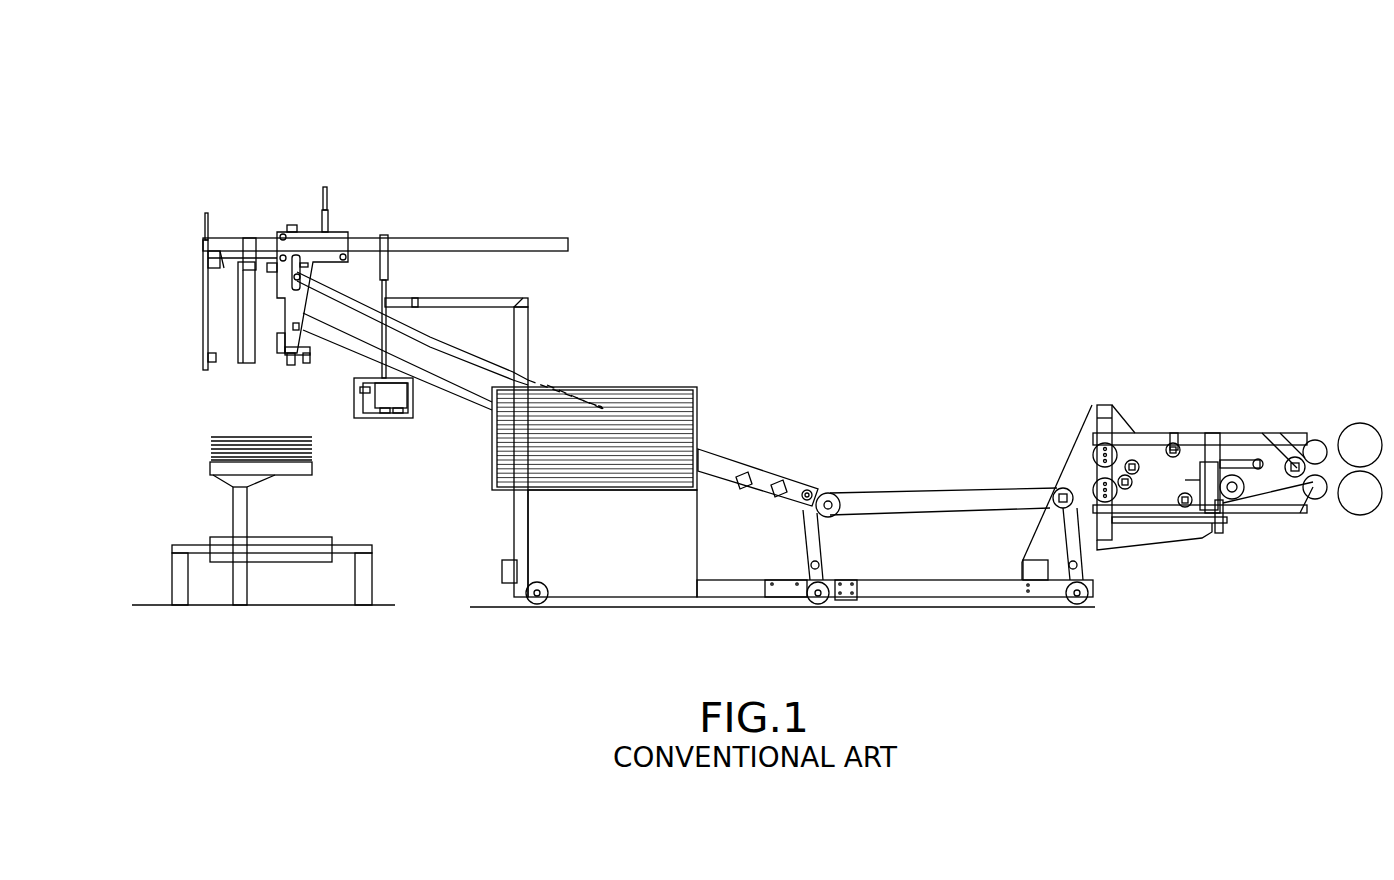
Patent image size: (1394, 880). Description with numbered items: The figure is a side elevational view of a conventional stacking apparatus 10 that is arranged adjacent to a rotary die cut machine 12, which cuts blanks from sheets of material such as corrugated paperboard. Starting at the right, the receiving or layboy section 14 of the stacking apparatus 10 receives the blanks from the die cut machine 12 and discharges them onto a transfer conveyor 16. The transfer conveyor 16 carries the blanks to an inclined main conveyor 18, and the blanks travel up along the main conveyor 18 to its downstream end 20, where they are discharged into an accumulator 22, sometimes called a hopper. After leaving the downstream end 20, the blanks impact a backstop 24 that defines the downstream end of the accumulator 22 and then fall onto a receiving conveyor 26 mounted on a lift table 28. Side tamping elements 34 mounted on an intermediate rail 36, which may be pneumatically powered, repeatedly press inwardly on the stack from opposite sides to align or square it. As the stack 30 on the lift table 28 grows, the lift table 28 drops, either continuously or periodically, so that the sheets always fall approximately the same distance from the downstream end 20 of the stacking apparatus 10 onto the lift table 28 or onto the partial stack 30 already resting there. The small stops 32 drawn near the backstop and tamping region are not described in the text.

The stacking apparatus 10 is at (887, 332).
The rotary die cut machine 12 is at (1342, 392).
The receiving or layboy section 14 is at (1213, 556).
The transfer conveyor 16 is at (944, 472).
The inclined main conveyor 18 is at (748, 440).
The downstream end 20 is at (307, 308).
The accumulator 22 is at (227, 298).
The backstop 24 is at (202, 335).
The receiving conveyor 26 is at (204, 483).
The lift table 28 is at (214, 538).
The stack 30 is at (184, 443).
The stops 32 is at (212, 357).
The side tamping elements 34 is at (250, 357).
The intermediate rail 36 is at (253, 243).